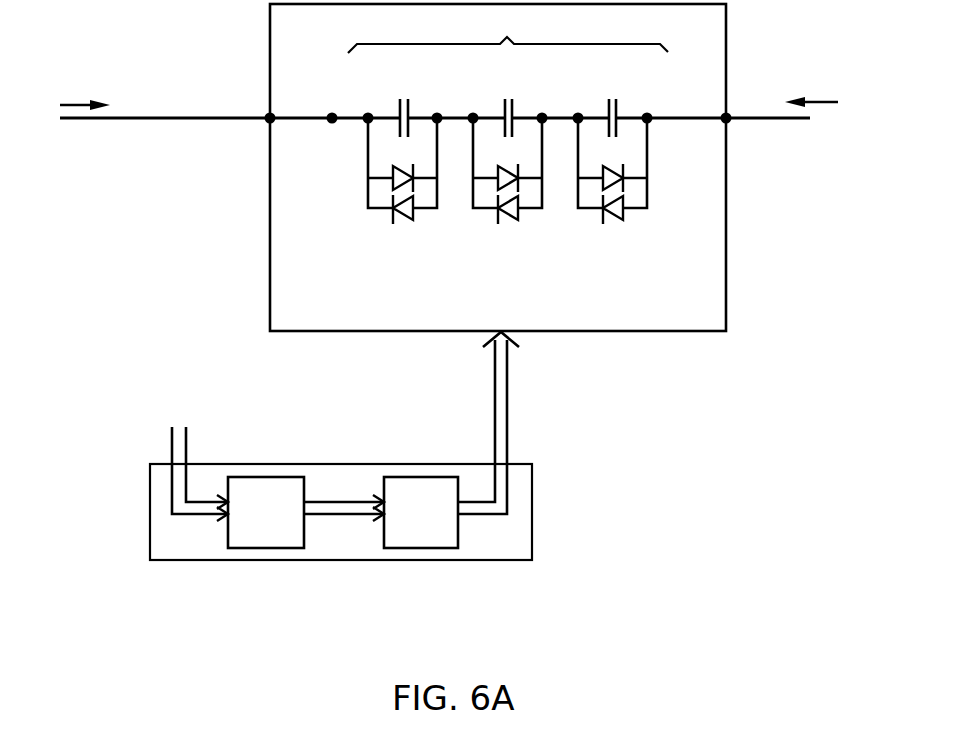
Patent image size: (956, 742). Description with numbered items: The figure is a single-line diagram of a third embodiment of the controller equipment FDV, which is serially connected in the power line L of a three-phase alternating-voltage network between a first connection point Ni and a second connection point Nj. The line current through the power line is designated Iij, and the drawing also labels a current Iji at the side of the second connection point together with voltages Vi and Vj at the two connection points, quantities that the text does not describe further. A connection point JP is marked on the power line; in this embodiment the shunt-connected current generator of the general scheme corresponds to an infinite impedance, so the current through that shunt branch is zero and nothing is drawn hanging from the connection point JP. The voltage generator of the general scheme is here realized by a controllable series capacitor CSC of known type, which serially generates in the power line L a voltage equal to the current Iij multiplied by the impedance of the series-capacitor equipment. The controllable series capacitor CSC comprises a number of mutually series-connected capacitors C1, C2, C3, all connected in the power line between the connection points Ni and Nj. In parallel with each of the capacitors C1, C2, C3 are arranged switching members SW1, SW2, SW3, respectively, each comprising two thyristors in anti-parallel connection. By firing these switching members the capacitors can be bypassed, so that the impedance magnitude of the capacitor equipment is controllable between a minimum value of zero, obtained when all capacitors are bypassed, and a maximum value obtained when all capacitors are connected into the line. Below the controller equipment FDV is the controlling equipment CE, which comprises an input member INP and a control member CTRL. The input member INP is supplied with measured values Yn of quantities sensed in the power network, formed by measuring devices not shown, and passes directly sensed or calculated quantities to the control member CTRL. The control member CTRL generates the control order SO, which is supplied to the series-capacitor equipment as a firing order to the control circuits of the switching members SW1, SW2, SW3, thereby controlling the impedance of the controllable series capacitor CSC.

The controller equipment FDV is at (728, 237).
The power line L is at (155, 119).
The current through the power line Iij is at (71, 64).
The current from node j to node i Iji is at (826, 62).
The first connection point Ni is at (268, 117).
The second connection point Nj is at (728, 117).
The voltage at node i Vi is at (233, 190).
The voltage at node j Vj is at (728, 119).
The connection point JP is at (331, 112).
The controllable series capacitor CSC is at (508, 30).
The capacitor C1 is at (409, 110).
The capacitor C2 is at (514, 110).
The capacitor C3 is at (618, 110).
The switching member SW1 is at (376, 221).
The switching member SW2 is at (481, 221).
The switching member SW3 is at (586, 221).
The control order SO is at (527, 423).
The controlling equipment CE is at (533, 512).
The measured values Yn is at (195, 459).
The input member INP is at (267, 548).
The control member CTRL is at (420, 548).